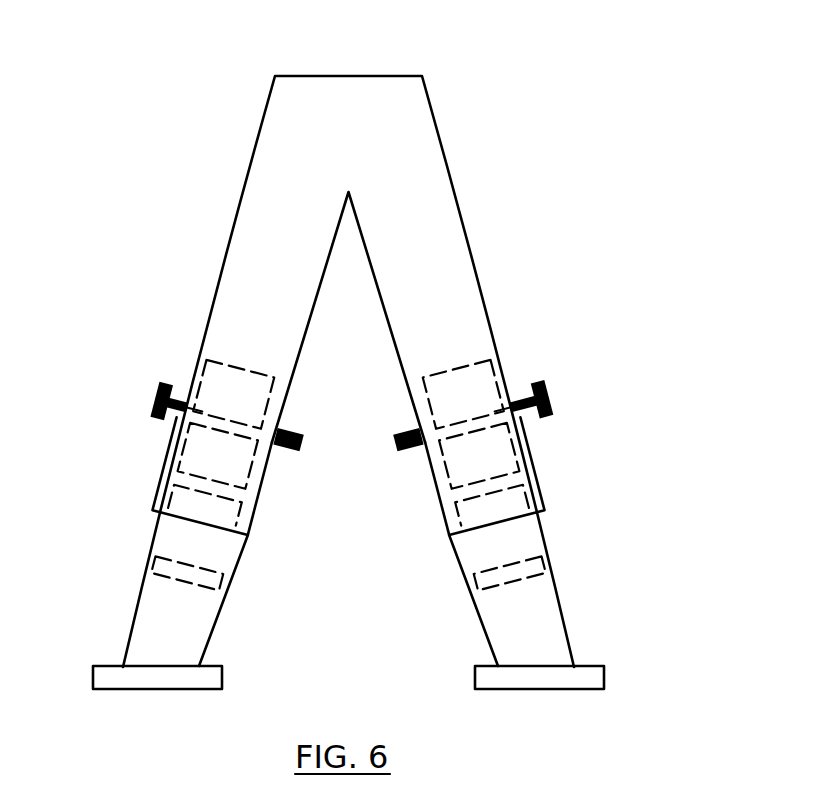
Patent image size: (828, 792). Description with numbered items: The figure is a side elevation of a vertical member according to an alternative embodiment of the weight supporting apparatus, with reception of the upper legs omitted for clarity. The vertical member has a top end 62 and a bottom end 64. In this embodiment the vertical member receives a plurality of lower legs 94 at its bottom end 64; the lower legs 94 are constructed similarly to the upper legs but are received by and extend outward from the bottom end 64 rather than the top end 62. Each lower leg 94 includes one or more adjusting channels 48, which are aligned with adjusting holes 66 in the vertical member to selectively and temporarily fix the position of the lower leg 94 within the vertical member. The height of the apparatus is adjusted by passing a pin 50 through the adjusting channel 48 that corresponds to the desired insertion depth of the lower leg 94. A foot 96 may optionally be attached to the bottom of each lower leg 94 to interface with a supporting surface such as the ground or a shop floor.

The top end 62 is at (278, 128).
The bottom end 64 is at (250, 533).
The adjusting holes 66 is at (178, 420).
The pin 50 is at (162, 385).
The adjusting channels 48 is at (158, 453).
The lower legs 94 is at (196, 640).
The foot 96 is at (208, 677).